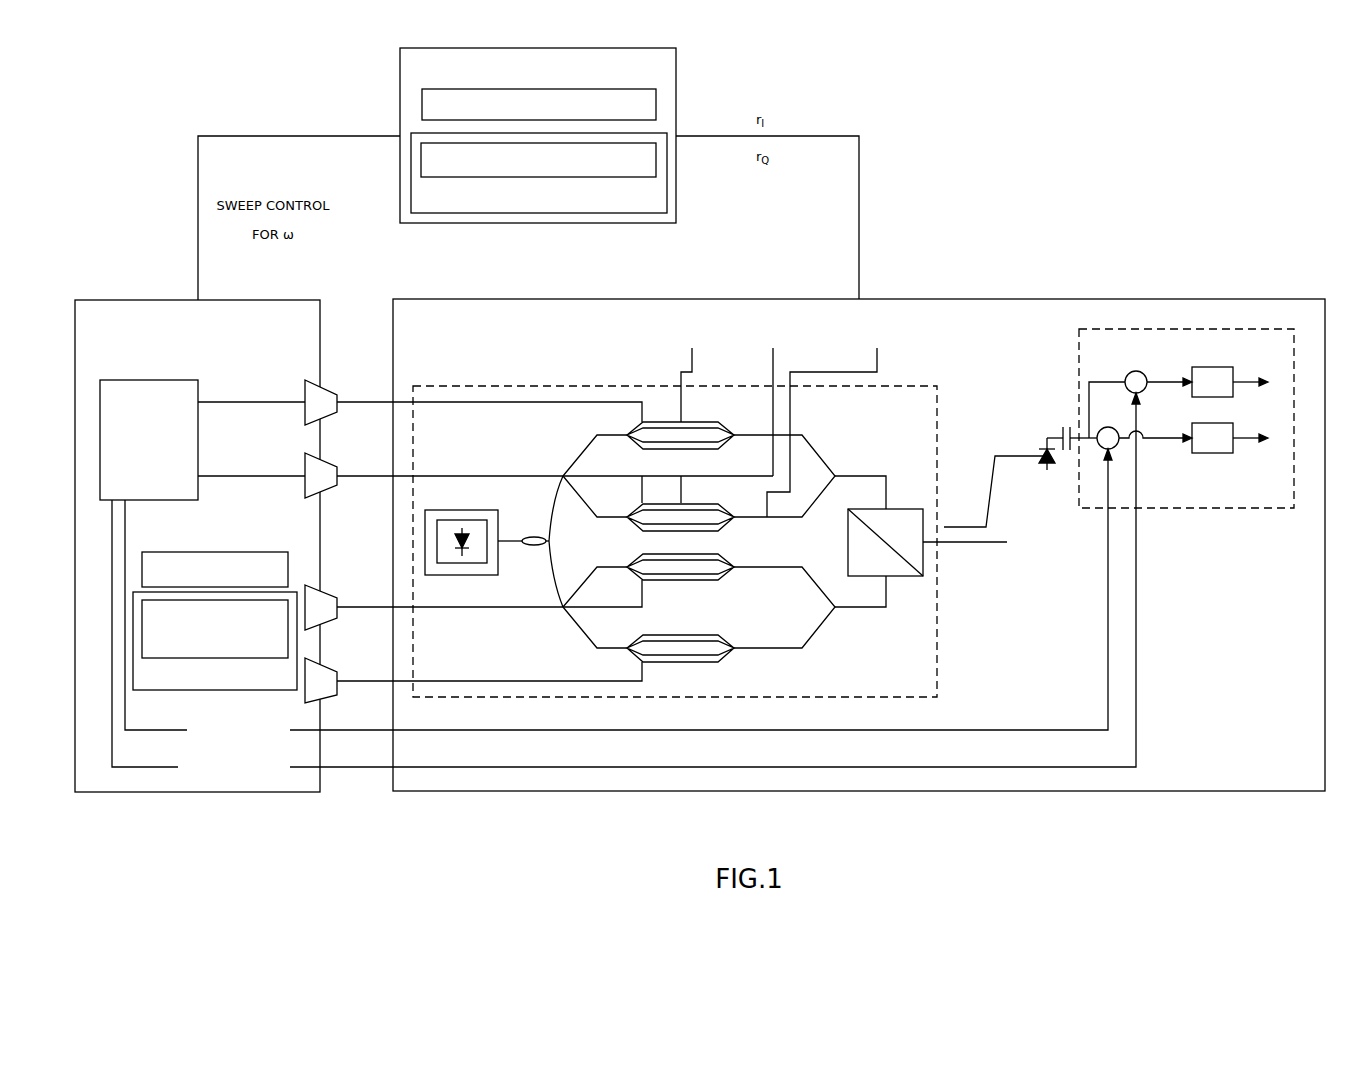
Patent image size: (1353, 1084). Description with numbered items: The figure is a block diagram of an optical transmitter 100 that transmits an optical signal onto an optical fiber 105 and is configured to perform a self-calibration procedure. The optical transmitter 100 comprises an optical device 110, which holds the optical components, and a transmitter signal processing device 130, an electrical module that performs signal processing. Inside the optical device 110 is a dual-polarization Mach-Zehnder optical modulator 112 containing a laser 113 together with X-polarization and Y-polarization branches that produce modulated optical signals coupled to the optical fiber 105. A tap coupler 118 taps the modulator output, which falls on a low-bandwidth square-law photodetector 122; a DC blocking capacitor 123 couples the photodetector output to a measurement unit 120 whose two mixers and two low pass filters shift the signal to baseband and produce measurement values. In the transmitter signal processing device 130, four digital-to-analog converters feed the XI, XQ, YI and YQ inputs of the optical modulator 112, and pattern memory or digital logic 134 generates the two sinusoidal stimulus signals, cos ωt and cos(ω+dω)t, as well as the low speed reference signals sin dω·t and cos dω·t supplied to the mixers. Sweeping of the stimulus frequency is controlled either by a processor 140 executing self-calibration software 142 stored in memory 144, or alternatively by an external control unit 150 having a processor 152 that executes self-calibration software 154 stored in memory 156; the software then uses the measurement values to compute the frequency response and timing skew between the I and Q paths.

The optical transmitter 100 is at (138, 74).
The optical fiber 105 is at (957, 542).
The optical device 110 is at (1252, 792).
The optical modulator 112 is at (533, 385).
The laser 113 is at (480, 510).
The tap coupler 118 is at (991, 497).
The measurement unit 120 is at (1242, 508).
The photodetector 122 is at (1042, 470).
The DC blocking capacitor 123 is at (1053, 418).
The transmitter signal processing device 130 is at (133, 300).
The pattern memory or digital logic 134 is at (148, 500).
The processor 140 is at (238, 552).
The self-calibration software 142 is at (288, 638).
The memory 144 is at (243, 690).
The external control unit 150 is at (400, 69).
The processor 152 is at (422, 103).
The self-calibration software 154 is at (421, 160).
The memory 156 is at (411, 195).